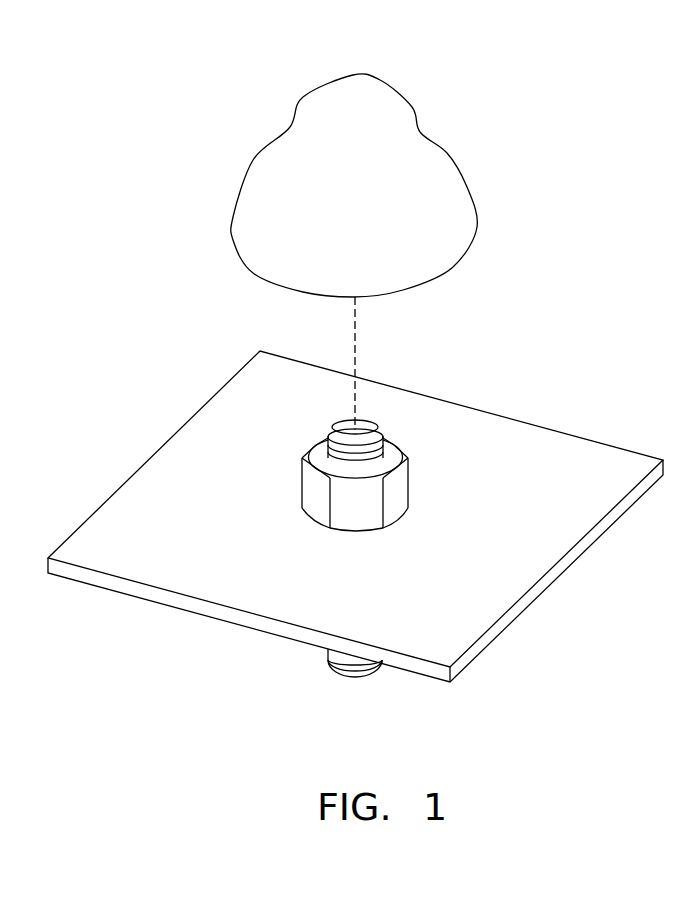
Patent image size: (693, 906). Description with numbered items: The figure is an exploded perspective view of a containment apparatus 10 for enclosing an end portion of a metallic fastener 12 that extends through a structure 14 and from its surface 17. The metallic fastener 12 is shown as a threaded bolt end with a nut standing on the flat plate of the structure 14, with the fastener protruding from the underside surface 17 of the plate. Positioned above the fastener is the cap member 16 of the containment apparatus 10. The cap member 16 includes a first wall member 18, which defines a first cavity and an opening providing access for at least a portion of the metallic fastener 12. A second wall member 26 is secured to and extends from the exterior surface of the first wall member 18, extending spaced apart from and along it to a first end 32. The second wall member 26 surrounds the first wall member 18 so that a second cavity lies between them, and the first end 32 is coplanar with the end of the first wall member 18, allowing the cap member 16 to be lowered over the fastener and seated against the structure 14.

The containment apparatus 10 is at (477, 32).
The metallic fastener 12 is at (392, 412).
The structure 14 is at (565, 465).
The cap member 16 is at (390, 128).
The surface 17 is at (483, 582).
The first wall member 18 is at (360, 98).
The second wall member 26 is at (400, 173).
The first end 32 is at (303, 292).